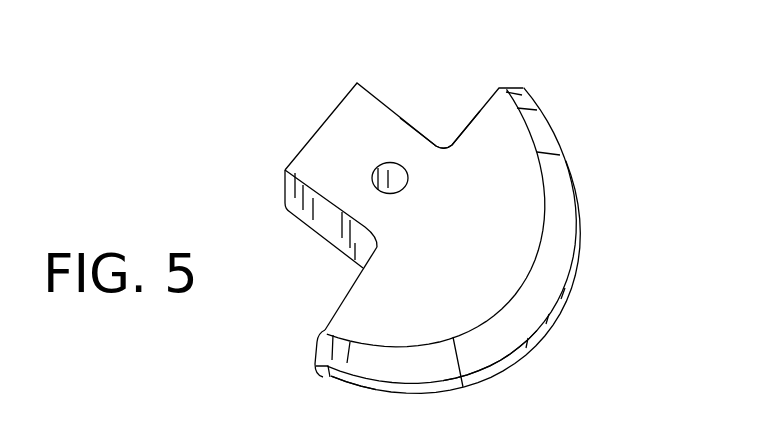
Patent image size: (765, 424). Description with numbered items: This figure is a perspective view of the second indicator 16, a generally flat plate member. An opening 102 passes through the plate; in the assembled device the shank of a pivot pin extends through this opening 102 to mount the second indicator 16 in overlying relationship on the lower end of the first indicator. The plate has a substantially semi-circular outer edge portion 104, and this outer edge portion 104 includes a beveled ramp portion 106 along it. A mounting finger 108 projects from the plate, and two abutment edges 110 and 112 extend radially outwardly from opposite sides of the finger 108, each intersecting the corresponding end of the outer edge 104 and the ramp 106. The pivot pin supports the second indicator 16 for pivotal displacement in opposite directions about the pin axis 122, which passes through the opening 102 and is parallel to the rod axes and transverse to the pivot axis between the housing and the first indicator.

The second indicator 16 is at (495, 68).
The opening 102 is at (372, 180).
The outer edge portion 104 is at (553, 320).
The beveled ramp portion 106 is at (487, 342).
The mounting finger 108 is at (357, 117).
The abutment edge 110 is at (350, 292).
The abutment edge 112 is at (472, 117).
The pin axis 122 is at (317, 400).